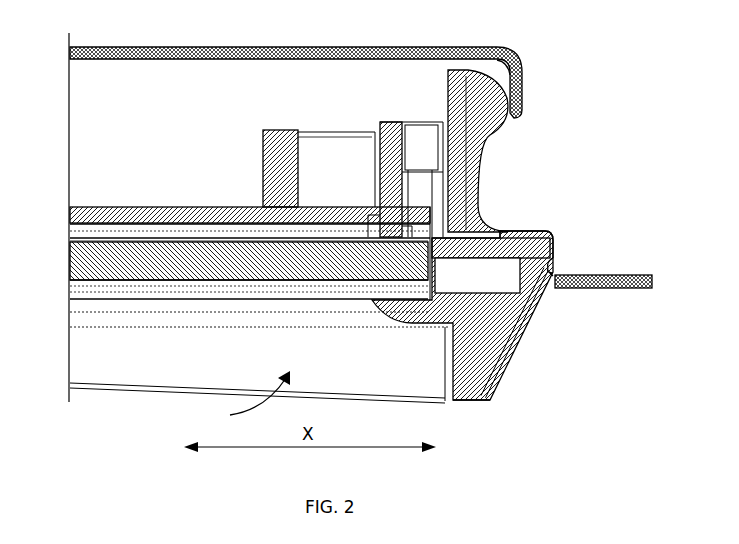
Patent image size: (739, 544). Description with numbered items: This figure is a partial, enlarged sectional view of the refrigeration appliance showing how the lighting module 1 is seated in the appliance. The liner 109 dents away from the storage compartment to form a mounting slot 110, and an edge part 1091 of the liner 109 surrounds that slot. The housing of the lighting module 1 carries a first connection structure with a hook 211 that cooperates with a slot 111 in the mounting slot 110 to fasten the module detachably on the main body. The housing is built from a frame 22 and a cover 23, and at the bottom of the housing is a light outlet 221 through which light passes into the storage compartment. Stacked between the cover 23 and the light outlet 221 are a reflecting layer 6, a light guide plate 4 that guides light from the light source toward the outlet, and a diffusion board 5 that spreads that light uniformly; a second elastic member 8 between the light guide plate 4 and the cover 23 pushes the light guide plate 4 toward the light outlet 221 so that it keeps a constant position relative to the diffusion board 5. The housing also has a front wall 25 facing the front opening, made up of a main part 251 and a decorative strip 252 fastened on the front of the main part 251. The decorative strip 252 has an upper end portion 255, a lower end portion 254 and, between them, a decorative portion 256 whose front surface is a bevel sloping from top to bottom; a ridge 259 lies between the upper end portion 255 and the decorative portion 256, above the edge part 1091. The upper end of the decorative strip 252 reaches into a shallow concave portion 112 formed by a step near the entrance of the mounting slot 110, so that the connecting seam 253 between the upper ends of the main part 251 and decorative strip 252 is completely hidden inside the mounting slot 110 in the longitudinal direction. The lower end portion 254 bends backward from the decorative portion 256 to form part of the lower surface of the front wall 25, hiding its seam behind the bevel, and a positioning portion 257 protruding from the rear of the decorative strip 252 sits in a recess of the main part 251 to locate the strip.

The lighting module 1 is at (255, 400).
The light guide plate 4 is at (100, 264).
The diffusion board 5 is at (185, 286).
The reflecting layer 6 is at (85, 243).
The second elastic member 8 is at (101, 232).
The frame 22 is at (512, 245).
The cover 23 is at (186, 207).
The front wall 25 is at (487, 315).
The liner 109 is at (393, 50).
The mounting slot 110 is at (233, 106).
The slot 111 is at (497, 71).
The concave portion 112 is at (550, 246).
The hook 211 is at (497, 95).
The light outlet 221 is at (270, 300).
The main part 251 is at (482, 340).
The decorative strip 252 is at (520, 333).
The connecting seam 253 is at (552, 260).
The lower end portion 254 is at (467, 398).
The upper end portion 255 is at (553, 269).
The decorative portion 256 is at (513, 347).
The positioning portion 257 is at (536, 287).
The ridge 259 is at (553, 274).
The edge part 1091 is at (630, 286).